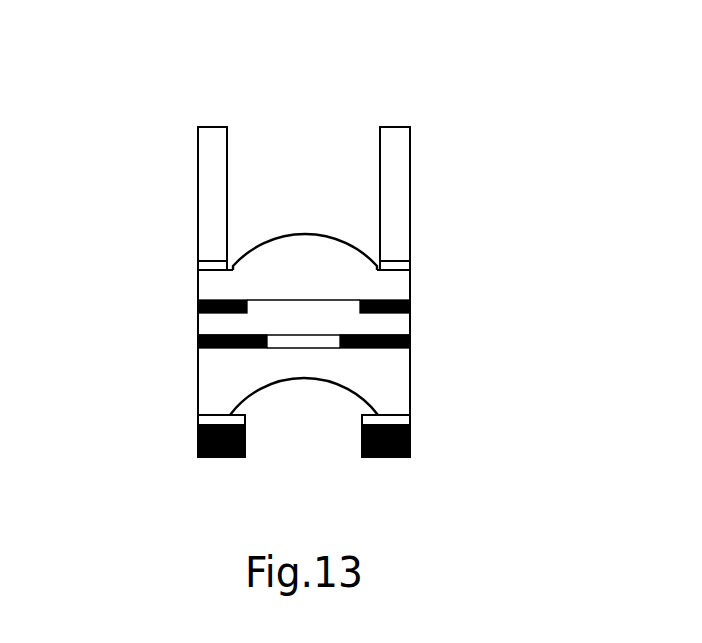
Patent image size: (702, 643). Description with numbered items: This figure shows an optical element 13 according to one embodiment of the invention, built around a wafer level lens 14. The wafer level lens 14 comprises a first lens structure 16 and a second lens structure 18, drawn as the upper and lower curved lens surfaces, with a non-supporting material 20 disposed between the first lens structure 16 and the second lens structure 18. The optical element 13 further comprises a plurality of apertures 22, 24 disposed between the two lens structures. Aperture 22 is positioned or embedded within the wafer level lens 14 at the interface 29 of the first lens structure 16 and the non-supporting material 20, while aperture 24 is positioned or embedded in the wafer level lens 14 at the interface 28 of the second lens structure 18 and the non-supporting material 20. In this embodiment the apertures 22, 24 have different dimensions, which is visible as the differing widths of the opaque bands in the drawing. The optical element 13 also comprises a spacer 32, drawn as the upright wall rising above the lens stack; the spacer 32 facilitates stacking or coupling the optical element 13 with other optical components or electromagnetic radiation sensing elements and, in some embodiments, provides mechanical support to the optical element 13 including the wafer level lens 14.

The optical element 13 is at (112, 160).
The wafer level lens 14 is at (182, 412).
The first lens structure 16 is at (283, 255).
The second lens structure 18 is at (297, 373).
The non-supporting material 20 is at (397, 325).
The aperture 22 is at (391, 298).
The aperture 24 is at (383, 350).
The interface 28 is at (325, 338).
The interface 29 is at (306, 300).
The spacer 32 is at (410, 180).